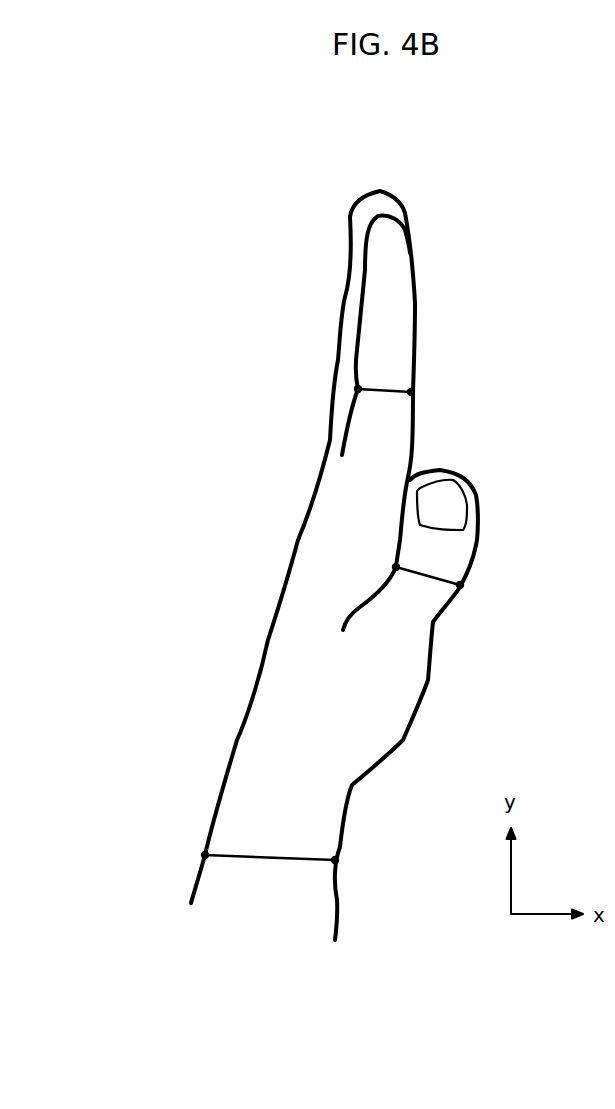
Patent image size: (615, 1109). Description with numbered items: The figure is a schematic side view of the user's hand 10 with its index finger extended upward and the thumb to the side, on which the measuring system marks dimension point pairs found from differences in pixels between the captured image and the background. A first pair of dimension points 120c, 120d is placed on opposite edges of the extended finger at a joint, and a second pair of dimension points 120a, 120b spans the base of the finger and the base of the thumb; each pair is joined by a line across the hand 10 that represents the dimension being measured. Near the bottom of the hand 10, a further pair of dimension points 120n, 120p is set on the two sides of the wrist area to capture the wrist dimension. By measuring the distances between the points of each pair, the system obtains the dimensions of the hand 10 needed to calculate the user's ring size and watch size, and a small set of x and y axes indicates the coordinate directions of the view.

The user's hand 10 is at (273, 225).
The dimension point 120a is at (382, 560).
The dimension point 120b is at (478, 580).
The dimension point 120c is at (343, 381).
The dimension point 120d is at (426, 384).
The dimension point 120n is at (189, 866).
The dimension point 120p is at (350, 871).